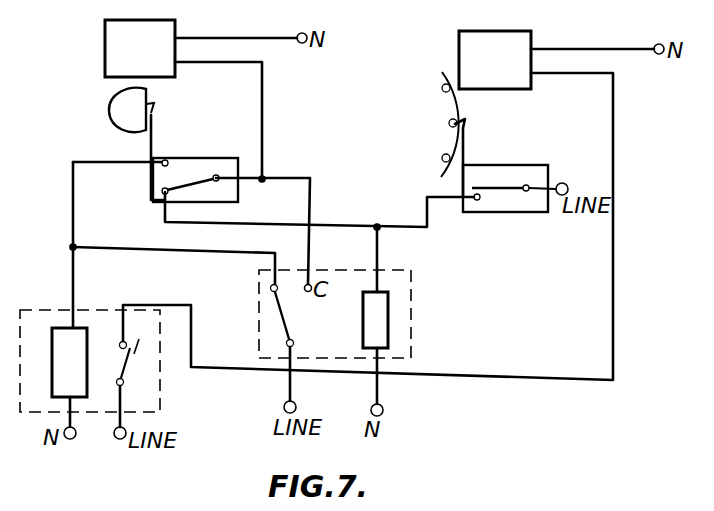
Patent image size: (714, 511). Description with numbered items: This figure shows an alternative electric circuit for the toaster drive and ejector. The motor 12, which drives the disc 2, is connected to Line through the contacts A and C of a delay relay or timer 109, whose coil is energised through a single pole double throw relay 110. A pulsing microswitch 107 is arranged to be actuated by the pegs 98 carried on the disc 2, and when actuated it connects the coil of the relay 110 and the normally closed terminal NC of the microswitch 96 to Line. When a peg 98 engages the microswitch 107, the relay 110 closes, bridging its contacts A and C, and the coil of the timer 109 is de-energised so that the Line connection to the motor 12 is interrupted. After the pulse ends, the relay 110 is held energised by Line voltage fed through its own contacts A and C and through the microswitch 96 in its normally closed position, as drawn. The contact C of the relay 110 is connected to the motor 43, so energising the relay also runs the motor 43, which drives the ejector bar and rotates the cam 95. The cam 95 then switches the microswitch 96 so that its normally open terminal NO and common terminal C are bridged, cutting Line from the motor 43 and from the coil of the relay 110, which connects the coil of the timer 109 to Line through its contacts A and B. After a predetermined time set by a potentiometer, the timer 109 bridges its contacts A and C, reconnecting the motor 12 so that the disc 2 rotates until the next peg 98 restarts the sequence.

The motor 43 is at (113, 52).
The motor 12 is at (472, 55).
The cam 95 is at (114, 113).
The microswitch 96 is at (225, 157).
The disc 2 is at (442, 84).
The pegs 98 is at (448, 124).
The pulsing microswitch 107 is at (525, 165).
The delay relay or timer 109 is at (160, 372).
The single pole double throw relay 110 is at (411, 308).